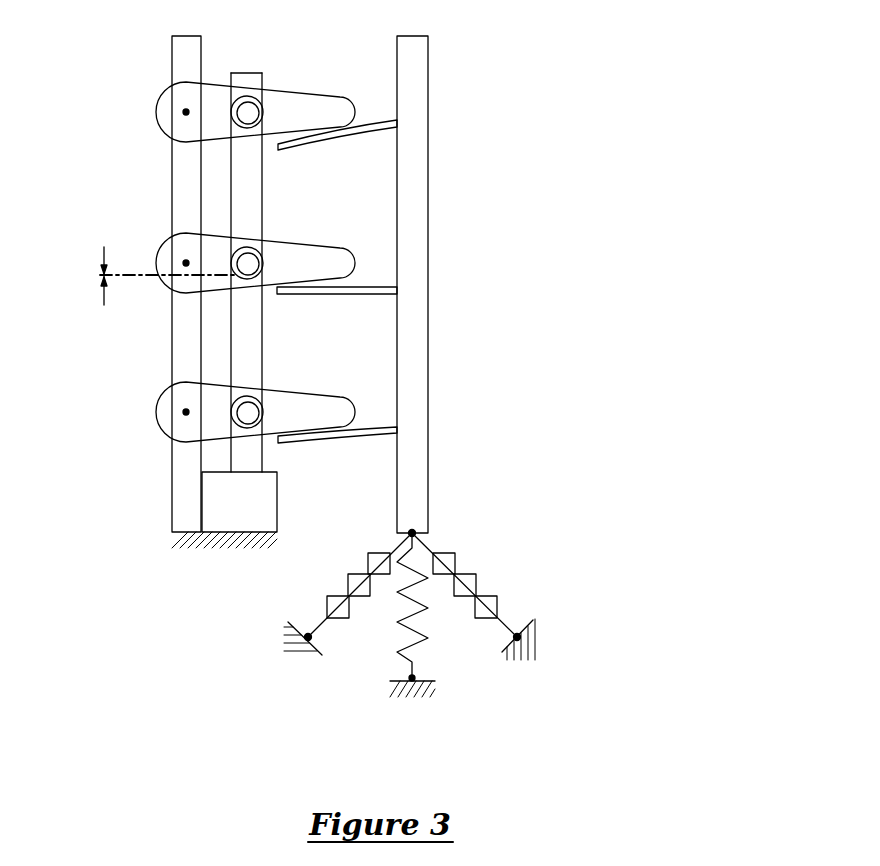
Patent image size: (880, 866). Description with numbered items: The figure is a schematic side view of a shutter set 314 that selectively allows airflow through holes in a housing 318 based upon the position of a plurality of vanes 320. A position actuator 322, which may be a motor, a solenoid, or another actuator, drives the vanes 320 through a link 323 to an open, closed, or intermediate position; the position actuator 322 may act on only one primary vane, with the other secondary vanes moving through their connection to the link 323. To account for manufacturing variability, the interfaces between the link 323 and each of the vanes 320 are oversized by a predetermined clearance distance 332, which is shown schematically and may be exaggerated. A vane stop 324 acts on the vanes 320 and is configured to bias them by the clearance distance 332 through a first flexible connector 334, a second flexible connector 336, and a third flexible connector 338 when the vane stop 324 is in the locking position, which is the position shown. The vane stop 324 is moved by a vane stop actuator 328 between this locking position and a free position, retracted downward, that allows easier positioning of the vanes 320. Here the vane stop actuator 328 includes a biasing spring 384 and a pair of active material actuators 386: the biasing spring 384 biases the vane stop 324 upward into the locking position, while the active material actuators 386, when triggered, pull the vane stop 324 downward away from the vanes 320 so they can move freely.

The shutter set 314 is at (631, 131).
The housing 318 is at (178, 505).
The vanes 320 is at (168, 103).
The position actuator 322 is at (221, 518).
The link 323 is at (255, 352).
The vane stop 324 is at (419, 215).
The vane stop actuator 328 is at (325, 708).
The predetermined clearance distance 332 is at (103, 285).
The first flexible connector 334 is at (356, 122).
The second flexible connector 336 is at (367, 290).
The third flexible connector 338 is at (358, 432).
The biasing spring 384 is at (417, 673).
The active material actuators 386 is at (325, 607).